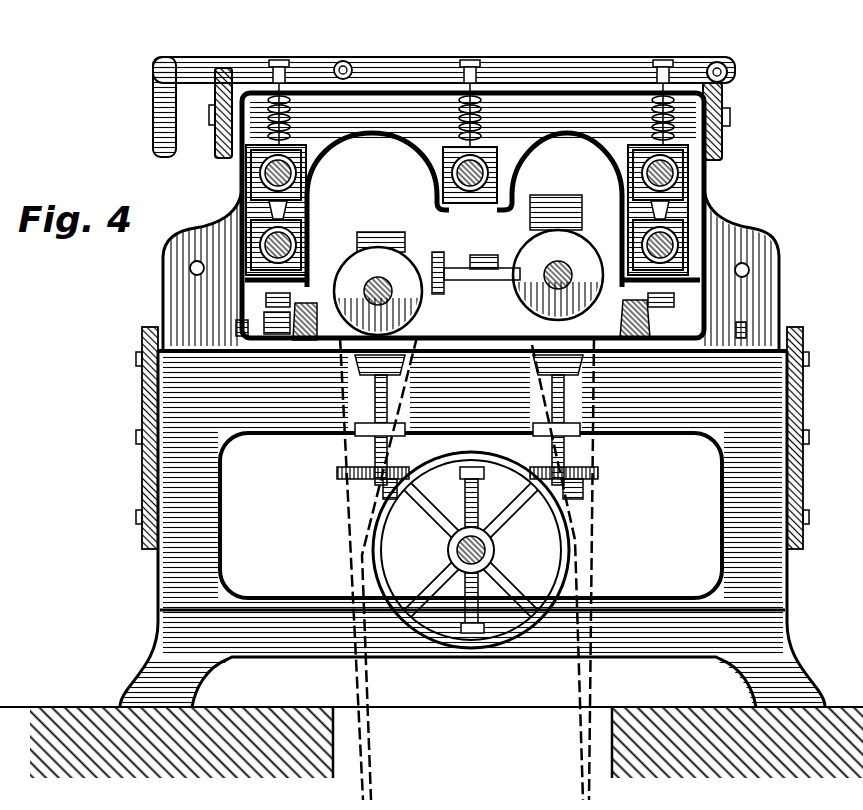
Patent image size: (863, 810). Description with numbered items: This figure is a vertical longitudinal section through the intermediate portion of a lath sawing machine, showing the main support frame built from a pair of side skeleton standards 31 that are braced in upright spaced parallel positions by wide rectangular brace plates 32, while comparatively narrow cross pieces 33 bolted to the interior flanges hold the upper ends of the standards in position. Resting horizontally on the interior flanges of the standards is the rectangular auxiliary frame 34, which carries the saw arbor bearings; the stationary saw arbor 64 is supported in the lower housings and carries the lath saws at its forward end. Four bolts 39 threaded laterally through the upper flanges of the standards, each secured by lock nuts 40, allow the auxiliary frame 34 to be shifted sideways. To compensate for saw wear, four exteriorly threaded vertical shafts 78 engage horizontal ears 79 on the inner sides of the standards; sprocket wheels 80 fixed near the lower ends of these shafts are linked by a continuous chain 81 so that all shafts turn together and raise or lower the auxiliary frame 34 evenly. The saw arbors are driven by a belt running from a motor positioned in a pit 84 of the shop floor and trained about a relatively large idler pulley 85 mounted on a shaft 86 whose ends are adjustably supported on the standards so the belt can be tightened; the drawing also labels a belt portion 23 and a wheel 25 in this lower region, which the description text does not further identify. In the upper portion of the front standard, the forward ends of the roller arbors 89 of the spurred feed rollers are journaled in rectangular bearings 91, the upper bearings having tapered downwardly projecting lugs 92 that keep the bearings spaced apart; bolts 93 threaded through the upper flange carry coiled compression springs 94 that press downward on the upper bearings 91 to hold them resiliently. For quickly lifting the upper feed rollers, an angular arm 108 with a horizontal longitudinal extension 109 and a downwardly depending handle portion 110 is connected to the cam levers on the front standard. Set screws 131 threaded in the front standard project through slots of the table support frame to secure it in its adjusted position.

The angular arm 108 is at (167, 80).
The longitudinal extension 109 is at (310, 73).
The handle portion 110 is at (165, 108).
The bolts 93 is at (472, 62).
The bearings 91 is at (640, 140).
The lugs 92 is at (275, 206).
The roller arbors 89 is at (457, 173).
The coiled compression springs 94 is at (655, 127).
The cross pieces 33 is at (223, 135).
The lock nuts 40 is at (557, 270).
The stationary saw arbor 64 is at (375, 291).
The set screws 131 is at (190, 268).
The idler pulley 85 is at (674, 304).
The bolts 39 is at (150, 328).
The auxiliary frame 34 is at (612, 327).
The brace plates 32 is at (143, 402).
The side skeleton standards 31 is at (760, 407).
The vertically arranged shafts 78 is at (380, 447).
The horizontal ears 79 is at (557, 405).
The sprocket wheels 80 is at (370, 483).
The continuous chain 81 is at (583, 487).
The belt 23 is at (350, 553).
The handwheel 25 is at (567, 553).
The shaft 86 is at (470, 565).
The pit 84 is at (340, 717).